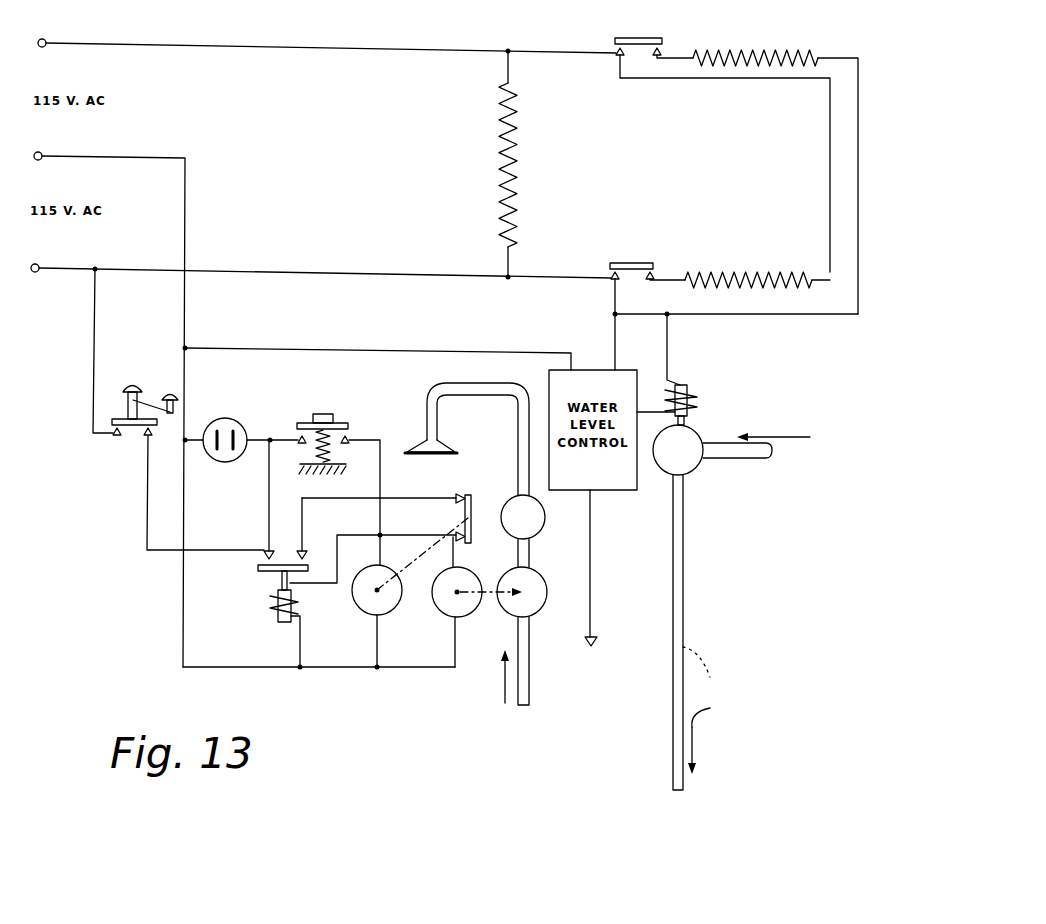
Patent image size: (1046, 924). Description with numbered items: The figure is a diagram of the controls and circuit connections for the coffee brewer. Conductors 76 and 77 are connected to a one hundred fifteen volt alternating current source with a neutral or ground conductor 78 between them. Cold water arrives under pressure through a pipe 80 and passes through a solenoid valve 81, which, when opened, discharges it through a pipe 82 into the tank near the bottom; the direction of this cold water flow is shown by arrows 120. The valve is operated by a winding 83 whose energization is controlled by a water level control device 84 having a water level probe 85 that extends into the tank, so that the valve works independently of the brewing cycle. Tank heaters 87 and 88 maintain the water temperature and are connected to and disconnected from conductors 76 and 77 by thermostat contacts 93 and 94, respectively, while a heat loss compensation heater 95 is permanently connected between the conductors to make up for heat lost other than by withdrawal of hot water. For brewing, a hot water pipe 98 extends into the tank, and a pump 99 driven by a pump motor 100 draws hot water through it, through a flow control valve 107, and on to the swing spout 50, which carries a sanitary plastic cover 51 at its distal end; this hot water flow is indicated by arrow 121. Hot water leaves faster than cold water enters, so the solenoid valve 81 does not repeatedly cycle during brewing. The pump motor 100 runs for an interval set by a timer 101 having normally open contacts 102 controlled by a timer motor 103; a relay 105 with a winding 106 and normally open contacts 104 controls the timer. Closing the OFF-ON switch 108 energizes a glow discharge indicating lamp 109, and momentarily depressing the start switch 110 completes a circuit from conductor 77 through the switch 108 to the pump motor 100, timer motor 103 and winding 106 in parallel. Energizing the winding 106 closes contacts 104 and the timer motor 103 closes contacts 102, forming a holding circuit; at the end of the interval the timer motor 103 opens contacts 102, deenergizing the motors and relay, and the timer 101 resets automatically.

The conductor 76 is at (152, 44).
The conductor 77 is at (78, 267).
The neutral or ground conductor 78 is at (113, 156).
The pipe 80 is at (723, 443).
The solenoid valve 81 is at (708, 411).
The pipe 82 is at (683, 610).
The winding 83 is at (693, 388).
The water level control device 84 is at (597, 358).
The water level probe 85 is at (592, 590).
The tank heater 87 is at (813, 53).
The tank heater 88 is at (790, 291).
The thermostat contacts 93 is at (633, 57).
The thermostat contacts 94 is at (635, 278).
The heat loss compensation heater 95 is at (500, 148).
The hot water pipe 98 is at (517, 637).
The pump 99 is at (540, 578).
The pump motor 100 is at (468, 575).
The timer 101 is at (347, 674).
The normally open contacts 102 is at (462, 516).
The timer motor 103 is at (353, 603).
The normally open contacts 104 is at (283, 560).
The relay 105 is at (250, 592).
The winding 106 is at (275, 608).
The flow control valve 107 is at (545, 515).
The OFF-ON switch 108 is at (123, 440).
The glow discharge indicating lamp 109 is at (247, 404).
The start switch 110 is at (357, 426).
The arrows 120 is at (767, 436).
The arrow 121 is at (502, 687).
The swing spout 50 is at (474, 387).
The sanitary plastic cover 51 is at (443, 443).